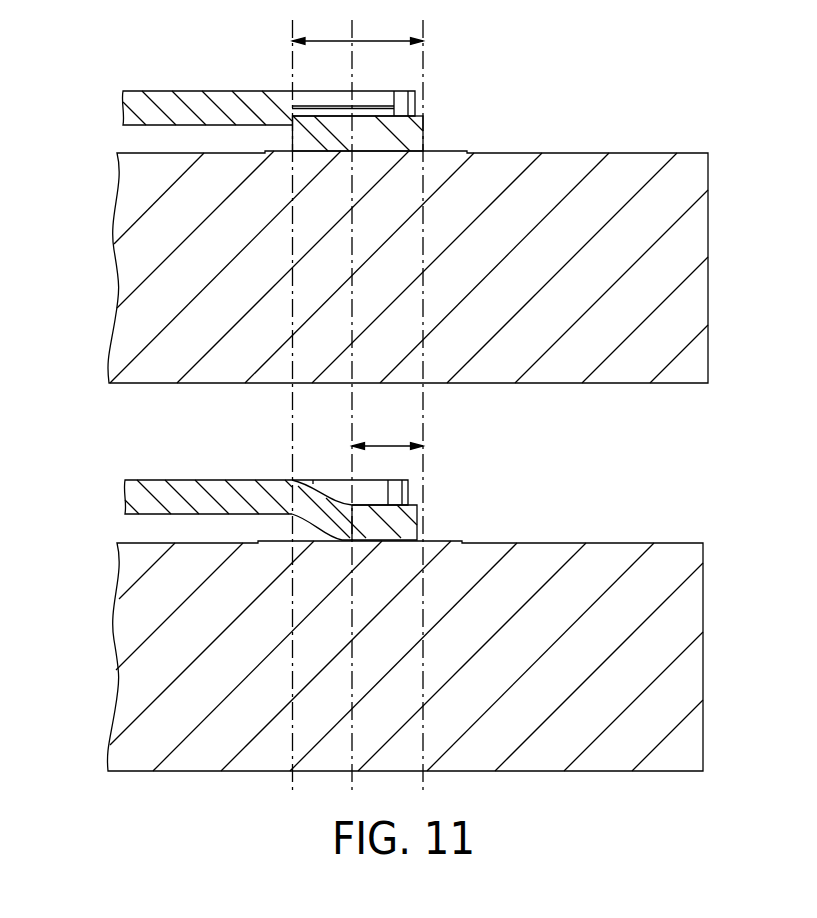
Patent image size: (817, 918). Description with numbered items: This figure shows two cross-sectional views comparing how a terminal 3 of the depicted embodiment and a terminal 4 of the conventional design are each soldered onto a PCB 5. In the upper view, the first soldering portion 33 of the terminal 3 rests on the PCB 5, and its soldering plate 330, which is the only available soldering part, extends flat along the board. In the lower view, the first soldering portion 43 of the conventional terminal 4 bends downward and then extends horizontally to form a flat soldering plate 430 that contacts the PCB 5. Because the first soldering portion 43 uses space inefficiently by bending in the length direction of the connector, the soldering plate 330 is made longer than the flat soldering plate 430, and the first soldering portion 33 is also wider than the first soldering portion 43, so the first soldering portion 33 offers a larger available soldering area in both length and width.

The terminal 3 is at (115, 74).
The first soldering portion 33 is at (223, 90).
The soldering plate 330 is at (413, 134).
The terminal 4 is at (115, 464).
The first soldering portion 43 is at (218, 480).
The flat soldering plate 430 is at (408, 523).
The PCB 5 is at (725, 270).